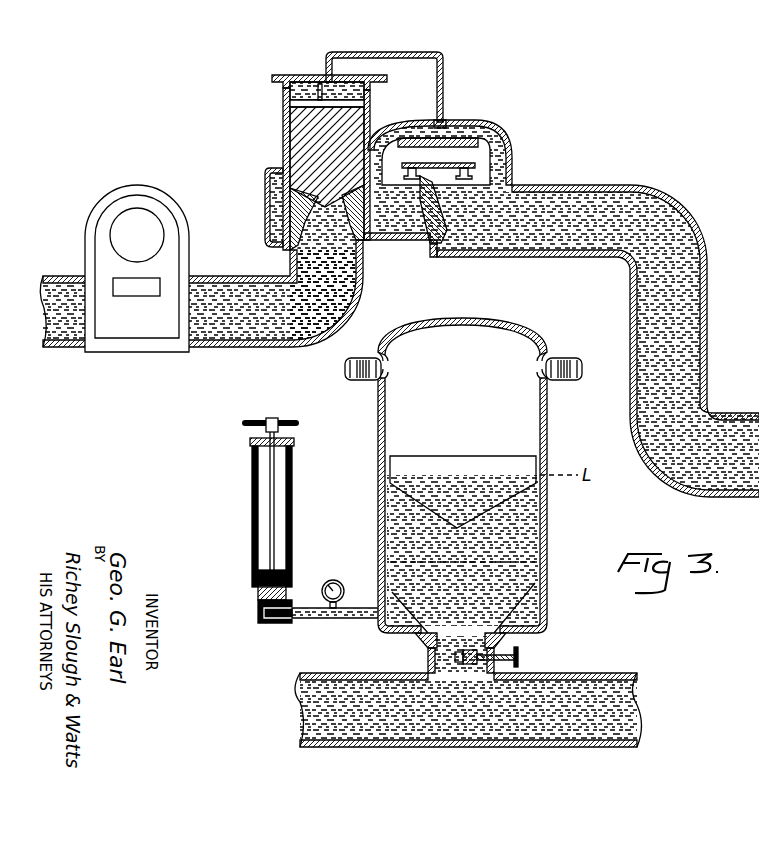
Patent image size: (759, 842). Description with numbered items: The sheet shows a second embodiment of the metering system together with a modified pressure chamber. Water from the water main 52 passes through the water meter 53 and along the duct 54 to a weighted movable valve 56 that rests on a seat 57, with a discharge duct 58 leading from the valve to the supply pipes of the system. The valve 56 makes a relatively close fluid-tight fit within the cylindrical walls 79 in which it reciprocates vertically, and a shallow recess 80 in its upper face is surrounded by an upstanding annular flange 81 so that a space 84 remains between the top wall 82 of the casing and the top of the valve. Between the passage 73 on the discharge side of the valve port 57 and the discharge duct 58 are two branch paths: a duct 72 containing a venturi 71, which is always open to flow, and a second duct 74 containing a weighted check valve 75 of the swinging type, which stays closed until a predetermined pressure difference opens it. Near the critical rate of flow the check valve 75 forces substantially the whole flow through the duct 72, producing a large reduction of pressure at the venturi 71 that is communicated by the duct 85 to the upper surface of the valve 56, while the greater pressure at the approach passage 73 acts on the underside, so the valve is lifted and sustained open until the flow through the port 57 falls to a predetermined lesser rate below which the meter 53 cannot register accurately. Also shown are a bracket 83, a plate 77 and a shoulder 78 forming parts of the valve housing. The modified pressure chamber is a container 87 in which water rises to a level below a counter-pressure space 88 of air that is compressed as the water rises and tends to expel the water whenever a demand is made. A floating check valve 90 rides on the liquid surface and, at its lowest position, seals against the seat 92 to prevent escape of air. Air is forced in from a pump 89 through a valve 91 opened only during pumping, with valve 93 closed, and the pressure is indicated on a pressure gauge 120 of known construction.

In FIG. 2, the water main 52 is at (68, 293).
In FIG. 2, the water meter 53 is at (170, 210).
In FIG. 2, the duct 54 is at (235, 305).
In FIG. 2, the weighted movable valve 56 is at (300, 155).
In FIG. 2, the valve seat 57 is at (345, 207).
In FIG. 2, the discharge duct 58 is at (570, 205).
In FIG. 2, the venturi 71 is at (443, 126).
In FIG. 2, the duct 72 is at (497, 130).
In FIG. 2, the passage 73 is at (369, 185).
In FIG. 2, the second duct 74 is at (408, 240).
In FIG. 2, the weighted check valve 75 is at (452, 232).
In FIG. 2, the plate 77 is at (445, 163).
In FIG. 2, the shoulder 78 is at (430, 250).
In FIG. 2, the cylindrical walls 79 is at (283, 115).
In FIG. 2, the shallow recess 80 is at (355, 103).
In FIG. 2, the annular flange 81 is at (320, 84).
In FIG. 2, the top wall 82 is at (306, 80).
In FIG. 2, the bracket 83 is at (268, 200).
In FIG. 2, the space 84 is at (290, 75).
In FIG. 2, the duct 85 is at (412, 53).
In FIG. 3, the container 87 is at (382, 457).
In FIG. 3, the counter-pressure space 88 is at (517, 415).
In FIG. 3, the pump 89 is at (277, 520).
In FIG. 3, the floating check valve 90 is at (450, 468).
In FIG. 3, the valve 91 is at (258, 606).
In FIG. 3, the seat 92 is at (425, 634).
In FIG. 3, the valve 93 is at (500, 649).
In FIG. 3, the pressure gauge 120 is at (334, 587).